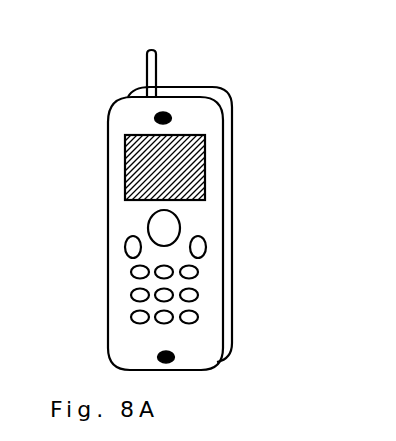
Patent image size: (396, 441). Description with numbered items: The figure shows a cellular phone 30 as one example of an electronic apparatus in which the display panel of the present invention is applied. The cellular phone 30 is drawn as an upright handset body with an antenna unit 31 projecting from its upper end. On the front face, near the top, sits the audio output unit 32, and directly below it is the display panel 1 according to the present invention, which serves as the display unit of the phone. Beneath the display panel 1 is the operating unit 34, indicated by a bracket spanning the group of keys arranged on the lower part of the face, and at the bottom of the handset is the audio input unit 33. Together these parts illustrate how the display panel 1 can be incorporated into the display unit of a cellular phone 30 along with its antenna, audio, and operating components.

The cellular phone 30 is at (262, 106).
The antenna unit 31 is at (158, 73).
The audio output unit 32 is at (168, 116).
The display panel 1 is at (205, 170).
The operating unit 34 is at (237, 208).
The audio input unit 33 is at (172, 357).